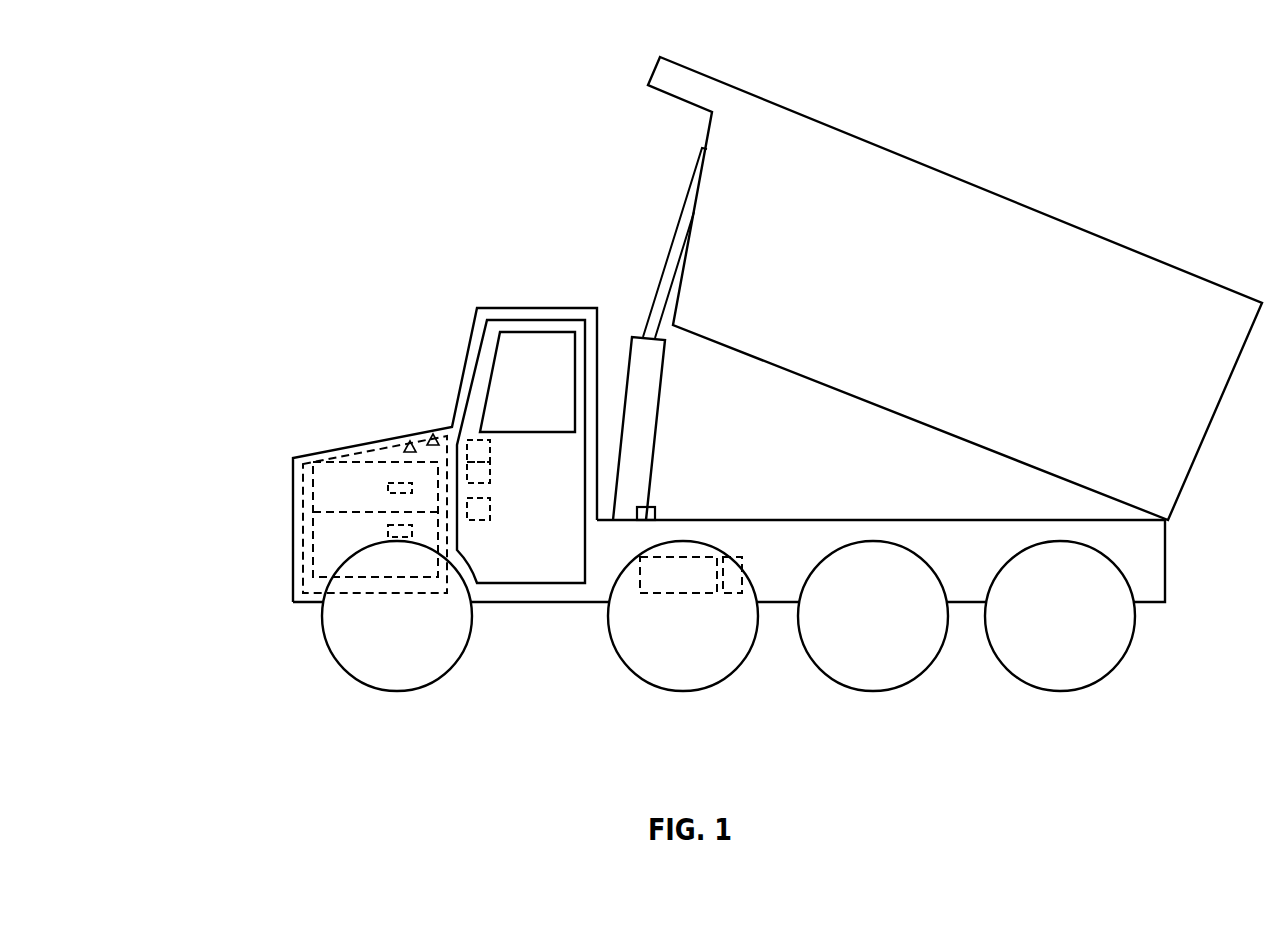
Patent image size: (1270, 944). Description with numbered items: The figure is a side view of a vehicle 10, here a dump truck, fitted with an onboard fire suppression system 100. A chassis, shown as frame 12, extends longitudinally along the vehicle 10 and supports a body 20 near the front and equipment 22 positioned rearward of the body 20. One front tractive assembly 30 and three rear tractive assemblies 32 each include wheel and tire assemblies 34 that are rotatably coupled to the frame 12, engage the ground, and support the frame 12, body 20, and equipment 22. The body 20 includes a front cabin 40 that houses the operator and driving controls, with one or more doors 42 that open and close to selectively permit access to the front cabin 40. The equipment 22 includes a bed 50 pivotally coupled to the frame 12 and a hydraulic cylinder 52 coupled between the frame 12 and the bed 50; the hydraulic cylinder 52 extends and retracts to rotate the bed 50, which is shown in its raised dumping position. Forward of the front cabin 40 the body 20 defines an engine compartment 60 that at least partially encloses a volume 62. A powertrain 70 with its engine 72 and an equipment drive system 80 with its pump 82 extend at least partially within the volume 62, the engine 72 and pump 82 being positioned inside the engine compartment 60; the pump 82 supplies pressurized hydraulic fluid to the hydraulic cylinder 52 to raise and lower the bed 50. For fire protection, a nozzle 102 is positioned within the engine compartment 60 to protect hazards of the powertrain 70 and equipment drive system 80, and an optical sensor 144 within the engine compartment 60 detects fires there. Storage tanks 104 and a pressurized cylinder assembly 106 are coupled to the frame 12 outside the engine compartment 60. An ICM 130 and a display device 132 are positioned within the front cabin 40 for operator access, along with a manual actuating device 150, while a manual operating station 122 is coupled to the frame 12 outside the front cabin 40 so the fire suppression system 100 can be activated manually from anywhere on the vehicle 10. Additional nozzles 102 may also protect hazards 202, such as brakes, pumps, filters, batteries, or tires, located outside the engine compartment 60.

The vehicle 10 is at (733, 421).
The frame 12 is at (729, 610).
The body 20 is at (405, 463).
The equipment 22 is at (955, 288).
The front tractive assembly 30 is at (397, 658).
The rear tractive assemblies 32 is at (802, 658).
The wheel and tire assemblies 34 is at (802, 626).
The front cabin 40 is at (527, 352).
The doors 42 is at (525, 610).
The bed 50 is at (872, 443).
The hydraulic cylinder 52 is at (653, 334).
The engine compartment 60 is at (330, 482).
The volume 62 is at (379, 426).
The powertrain 70 is at (265, 558).
The engine 72 is at (338, 536).
The equipment drive system 80 is at (266, 522).
The pump 82 is at (338, 514).
The fire suppression system 100 is at (677, 625).
The nozzle 102 is at (413, 380).
The storage tanks 104 is at (689, 536).
The pressurized cylinder assembly 106 is at (755, 529).
The manual operating station 122 is at (662, 478).
The ICM 130 is at (516, 464).
The display device 132 is at (516, 490).
The optical sensor 144 is at (384, 409).
The manual actuating device 150 is at (508, 531).
The hazards 202 is at (363, 552).